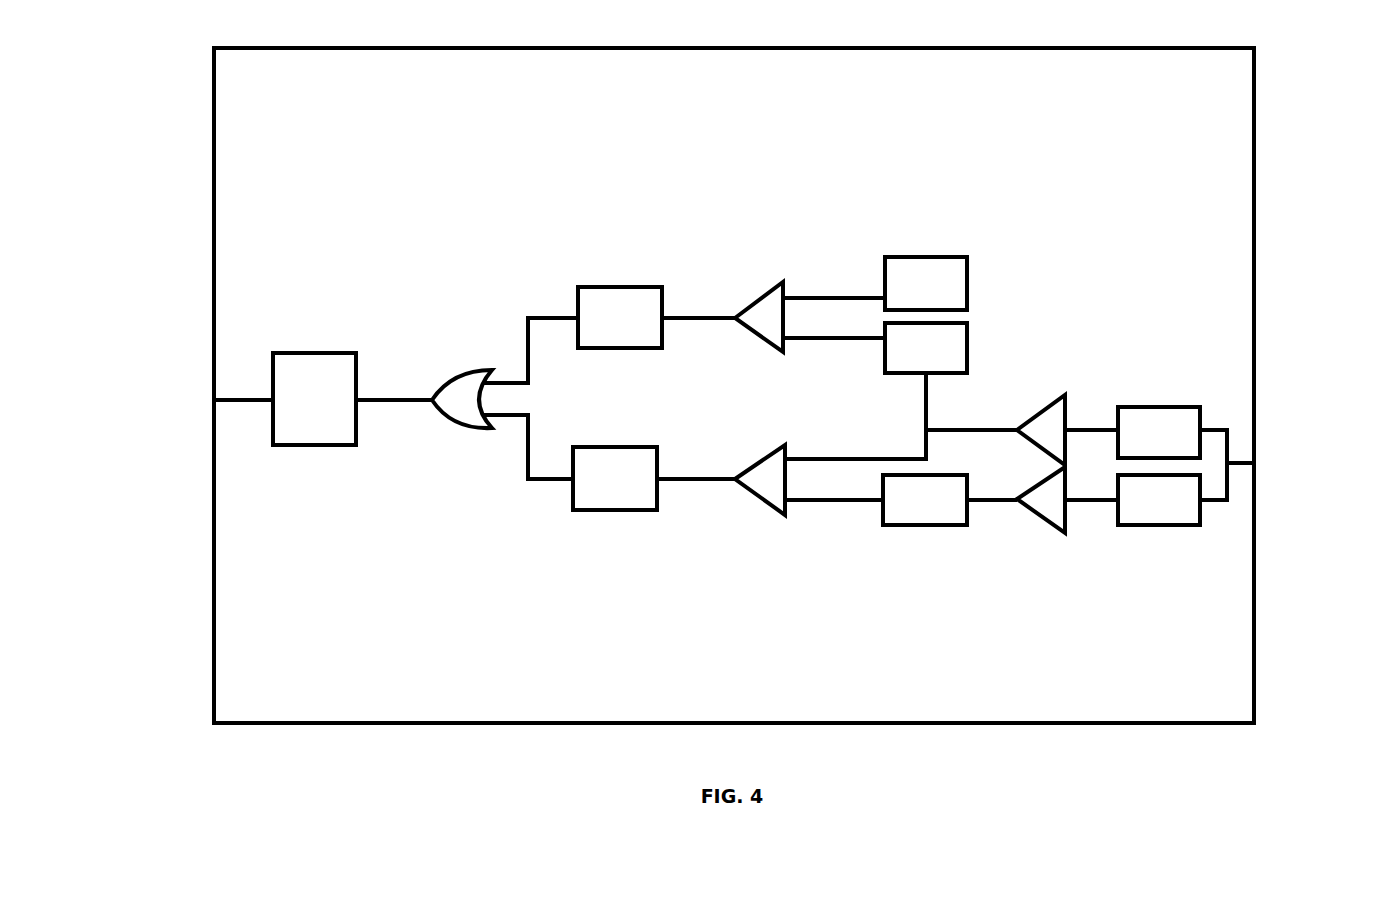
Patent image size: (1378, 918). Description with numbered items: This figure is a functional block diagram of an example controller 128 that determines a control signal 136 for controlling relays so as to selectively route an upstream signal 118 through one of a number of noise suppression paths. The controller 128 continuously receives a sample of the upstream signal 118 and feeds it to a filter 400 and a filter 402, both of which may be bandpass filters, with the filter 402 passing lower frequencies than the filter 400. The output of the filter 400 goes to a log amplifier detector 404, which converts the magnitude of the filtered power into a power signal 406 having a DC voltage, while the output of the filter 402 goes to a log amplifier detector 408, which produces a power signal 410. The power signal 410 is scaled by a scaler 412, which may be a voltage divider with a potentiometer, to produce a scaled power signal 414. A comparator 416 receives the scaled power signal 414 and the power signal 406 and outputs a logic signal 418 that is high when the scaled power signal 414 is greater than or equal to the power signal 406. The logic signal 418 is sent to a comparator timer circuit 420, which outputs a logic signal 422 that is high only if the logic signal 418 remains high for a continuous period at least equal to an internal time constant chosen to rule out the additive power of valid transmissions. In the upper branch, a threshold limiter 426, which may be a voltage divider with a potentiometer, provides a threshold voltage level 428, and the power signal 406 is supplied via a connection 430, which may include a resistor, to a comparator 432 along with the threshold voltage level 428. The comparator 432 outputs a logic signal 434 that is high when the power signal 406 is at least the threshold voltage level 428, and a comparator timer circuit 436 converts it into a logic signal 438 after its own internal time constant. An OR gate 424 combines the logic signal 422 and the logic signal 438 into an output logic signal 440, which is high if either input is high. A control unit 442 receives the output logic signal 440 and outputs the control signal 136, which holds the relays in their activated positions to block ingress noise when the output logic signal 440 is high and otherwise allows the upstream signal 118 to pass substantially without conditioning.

The controller 128 is at (734, 385).
The control signal 136 is at (207, 400).
The control unit 442 is at (314, 399).
The output logic signal 440 is at (430, 427).
The OR gate 424 is at (453, 358).
The logic signal 438 is at (535, 295).
The comparator timer circuit 436 is at (620, 317).
The logic signal 434 is at (733, 340).
The comparator 432 is at (752, 292).
The threshold voltage level 428 is at (870, 283).
The threshold limiter 426 is at (926, 283).
The connection 430 is at (875, 348).
The power signal 406 is at (957, 415).
The log amplifier detector 404 is at (1068, 388).
The filter 400 is at (1159, 432).
The filter 402 is at (1159, 500).
The upstream signal 118 is at (1280, 463).
The log amplifier detector 408 is at (1068, 525).
The power signal 410 is at (998, 537).
The scaler 412 is at (925, 500).
The scaled power signal 414 is at (812, 520).
The comparator 416 is at (775, 520).
The logic signal 418 is at (733, 499).
The comparator timer circuit 420 is at (615, 478).
The logic signal 422 is at (538, 507).